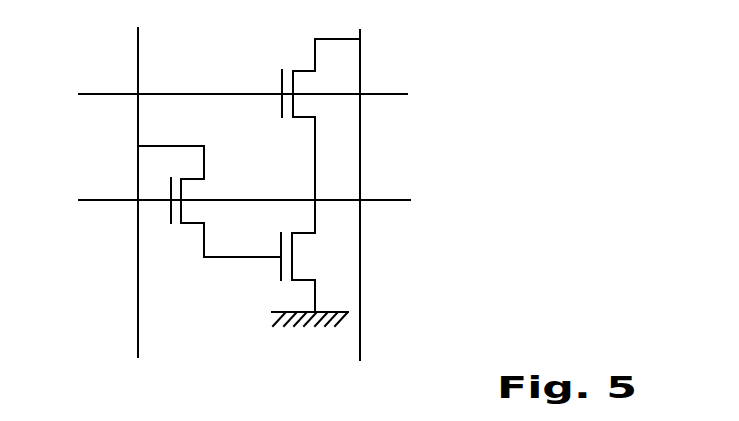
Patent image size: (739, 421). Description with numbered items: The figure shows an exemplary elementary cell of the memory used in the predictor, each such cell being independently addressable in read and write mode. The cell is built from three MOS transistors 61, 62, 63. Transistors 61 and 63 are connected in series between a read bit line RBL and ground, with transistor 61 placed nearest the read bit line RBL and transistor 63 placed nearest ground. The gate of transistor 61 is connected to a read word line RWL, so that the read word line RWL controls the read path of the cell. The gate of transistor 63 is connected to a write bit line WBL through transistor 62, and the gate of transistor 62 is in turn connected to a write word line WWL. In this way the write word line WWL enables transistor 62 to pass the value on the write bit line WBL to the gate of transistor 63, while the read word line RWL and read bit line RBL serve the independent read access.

The MOS transistor 61 is at (280, 80).
The MOS transistor 62 is at (181, 190).
The MOS transistor 63 is at (293, 268).
The read word line RWL is at (104, 93).
The write word line WWL is at (104, 199).
The write bit line WBL is at (137, 300).
The read bit line RBL is at (366, 40).